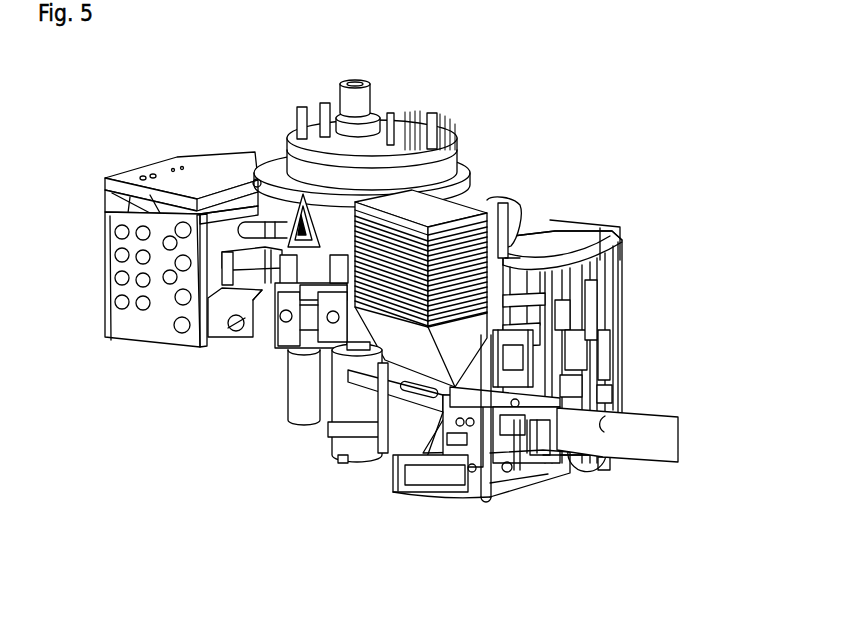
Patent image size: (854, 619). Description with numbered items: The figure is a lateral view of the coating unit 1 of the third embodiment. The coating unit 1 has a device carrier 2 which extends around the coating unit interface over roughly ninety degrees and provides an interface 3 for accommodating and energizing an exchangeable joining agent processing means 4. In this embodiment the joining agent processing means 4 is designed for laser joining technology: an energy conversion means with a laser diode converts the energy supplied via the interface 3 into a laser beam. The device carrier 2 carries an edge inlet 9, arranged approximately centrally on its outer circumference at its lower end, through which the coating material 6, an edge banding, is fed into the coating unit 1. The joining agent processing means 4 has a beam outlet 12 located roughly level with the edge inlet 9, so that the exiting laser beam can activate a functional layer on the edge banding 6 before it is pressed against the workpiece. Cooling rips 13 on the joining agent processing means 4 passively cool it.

The coating unit 1 is at (106, 135).
The device carrier 2 is at (560, 243).
The interface 3 is at (503, 220).
The joining agent processing means 4 is at (450, 184).
The coating material 6 is at (618, 405).
The edge inlet 9 is at (573, 473).
The beam outlet 12 is at (382, 457).
The cooling rips 13 is at (287, 347).